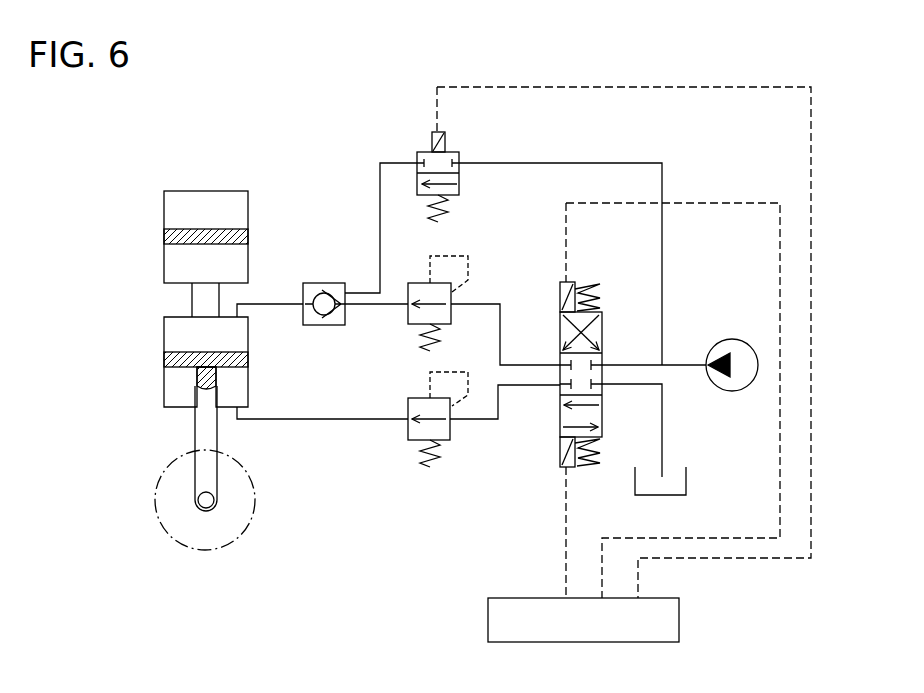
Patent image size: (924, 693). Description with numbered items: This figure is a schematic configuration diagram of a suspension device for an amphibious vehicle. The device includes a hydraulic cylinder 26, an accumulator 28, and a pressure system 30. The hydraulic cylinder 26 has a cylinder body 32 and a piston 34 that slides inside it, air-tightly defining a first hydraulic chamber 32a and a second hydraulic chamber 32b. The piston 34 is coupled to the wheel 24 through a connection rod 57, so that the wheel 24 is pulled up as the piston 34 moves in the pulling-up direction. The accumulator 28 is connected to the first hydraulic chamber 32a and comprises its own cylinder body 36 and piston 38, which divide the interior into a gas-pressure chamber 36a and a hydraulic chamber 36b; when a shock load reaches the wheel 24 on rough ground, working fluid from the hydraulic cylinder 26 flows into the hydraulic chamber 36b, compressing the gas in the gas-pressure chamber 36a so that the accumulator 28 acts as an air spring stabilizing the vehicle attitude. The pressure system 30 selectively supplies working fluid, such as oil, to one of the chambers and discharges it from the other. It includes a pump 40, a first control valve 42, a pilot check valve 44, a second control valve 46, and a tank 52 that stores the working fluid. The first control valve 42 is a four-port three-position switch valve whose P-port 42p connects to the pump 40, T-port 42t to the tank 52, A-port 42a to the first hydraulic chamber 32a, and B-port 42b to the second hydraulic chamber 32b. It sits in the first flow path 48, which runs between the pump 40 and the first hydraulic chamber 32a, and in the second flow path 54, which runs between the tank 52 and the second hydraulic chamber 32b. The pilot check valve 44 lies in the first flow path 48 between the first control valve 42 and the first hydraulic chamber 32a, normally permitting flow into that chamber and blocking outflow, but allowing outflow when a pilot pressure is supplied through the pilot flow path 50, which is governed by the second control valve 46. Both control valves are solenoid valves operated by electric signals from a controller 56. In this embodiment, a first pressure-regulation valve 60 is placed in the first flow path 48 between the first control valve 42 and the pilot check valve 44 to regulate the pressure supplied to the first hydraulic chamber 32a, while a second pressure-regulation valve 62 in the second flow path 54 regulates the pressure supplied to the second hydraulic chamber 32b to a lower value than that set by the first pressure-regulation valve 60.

The wheel 24 is at (256, 497).
The hydraulic cylinder 26 is at (201, 339).
The accumulator 28 is at (202, 225).
The pressure system 30 is at (739, 67).
The cylinder body 32 is at (163, 331).
The first hydraulic chamber 32a is at (248, 337).
The second hydraulic chamber 32b is at (248, 384).
The piston 34 is at (163, 360).
The cylinder body 36 is at (163, 211).
The gas-pressure chamber 36a is at (248, 212).
The hydraulic chamber 36b is at (248, 260).
The piston 38 is at (163, 237).
The pump 40 is at (733, 340).
The first control valve 42 is at (577, 369).
The A-port 42a is at (559, 364).
The B-port 42b is at (559, 386).
The P-port 42p is at (604, 364).
The T-port 42t is at (604, 386).
The pilot check valve 44 is at (325, 282).
The second control valve 46 is at (417, 152).
The first flow path 48 is at (452, 309).
The pilot flow path 50 is at (379, 195).
The tank 52 is at (687, 481).
The second flow path 54 is at (341, 418).
The controller 56 is at (680, 620).
The connection rod 57 is at (194, 436).
The first pressure-regulation valve 60 is at (451, 326).
The second pressure-regulation valve 62 is at (450, 441).